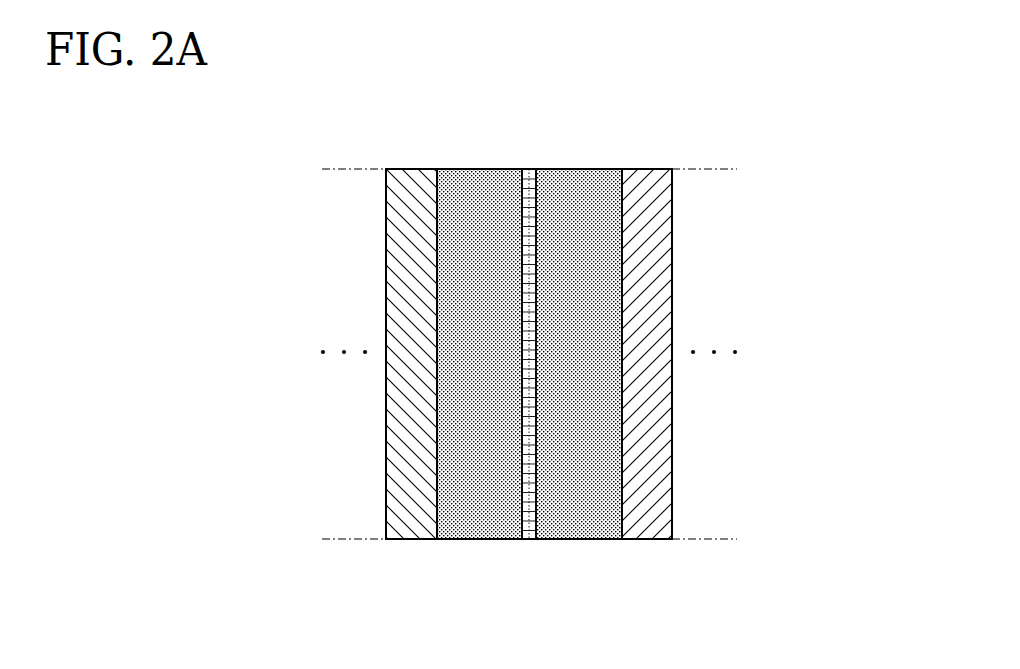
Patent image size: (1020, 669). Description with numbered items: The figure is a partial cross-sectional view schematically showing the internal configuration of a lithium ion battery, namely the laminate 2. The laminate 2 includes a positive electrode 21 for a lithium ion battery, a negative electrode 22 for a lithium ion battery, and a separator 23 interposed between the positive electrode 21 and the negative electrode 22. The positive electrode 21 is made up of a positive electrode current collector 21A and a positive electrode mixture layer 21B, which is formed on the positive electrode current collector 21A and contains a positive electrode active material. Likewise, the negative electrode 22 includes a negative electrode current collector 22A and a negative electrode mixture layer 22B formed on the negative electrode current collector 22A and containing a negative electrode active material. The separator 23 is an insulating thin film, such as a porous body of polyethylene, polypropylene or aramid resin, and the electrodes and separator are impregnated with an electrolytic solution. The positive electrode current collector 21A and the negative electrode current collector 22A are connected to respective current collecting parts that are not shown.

The laminate 2 is at (529, 360).
The positive electrode 21 is at (427, 407).
The positive electrode current collector 21A is at (418, 503).
The positive electrode mixture layer 21B is at (482, 503).
The negative electrode 22 is at (630, 407).
The negative electrode current collector 22A is at (643, 503).
The negative electrode mixture layer 22B is at (573, 503).
The separator 23 is at (530, 525).